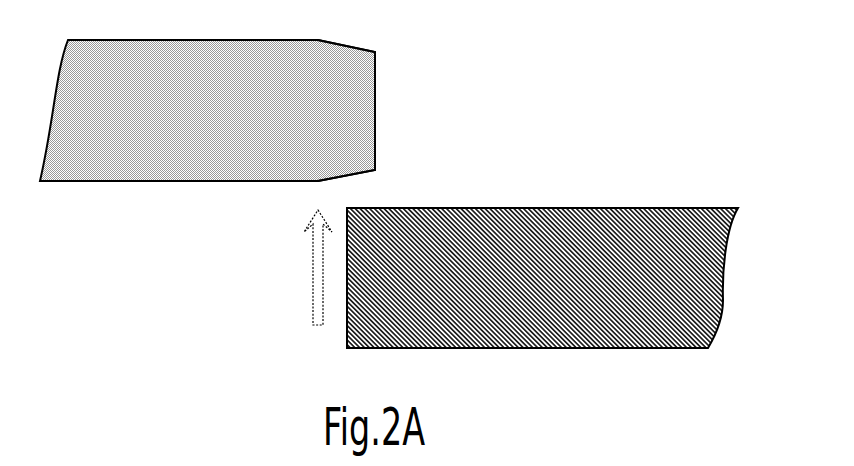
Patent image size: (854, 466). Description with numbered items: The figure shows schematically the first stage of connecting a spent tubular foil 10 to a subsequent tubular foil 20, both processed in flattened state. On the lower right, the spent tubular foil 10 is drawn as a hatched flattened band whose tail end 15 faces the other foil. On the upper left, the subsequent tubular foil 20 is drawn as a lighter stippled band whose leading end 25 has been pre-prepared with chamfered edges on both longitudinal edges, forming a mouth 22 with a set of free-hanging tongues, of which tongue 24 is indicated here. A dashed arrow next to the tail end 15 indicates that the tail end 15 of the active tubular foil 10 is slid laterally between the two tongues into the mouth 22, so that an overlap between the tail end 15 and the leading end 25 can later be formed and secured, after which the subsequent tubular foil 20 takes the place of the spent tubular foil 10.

The spent tubular foil 10 is at (573, 228).
The tail end 15 is at (367, 320).
The subsequent tubular foil 20 is at (118, 163).
The mouth 22 is at (391, 110).
The tongue 24 is at (368, 93).
The leading end 25 is at (298, 73).